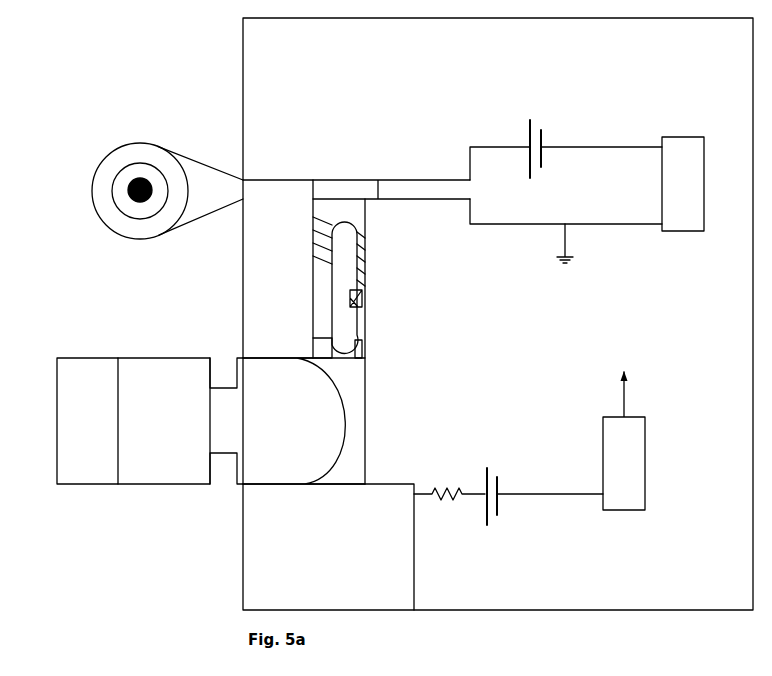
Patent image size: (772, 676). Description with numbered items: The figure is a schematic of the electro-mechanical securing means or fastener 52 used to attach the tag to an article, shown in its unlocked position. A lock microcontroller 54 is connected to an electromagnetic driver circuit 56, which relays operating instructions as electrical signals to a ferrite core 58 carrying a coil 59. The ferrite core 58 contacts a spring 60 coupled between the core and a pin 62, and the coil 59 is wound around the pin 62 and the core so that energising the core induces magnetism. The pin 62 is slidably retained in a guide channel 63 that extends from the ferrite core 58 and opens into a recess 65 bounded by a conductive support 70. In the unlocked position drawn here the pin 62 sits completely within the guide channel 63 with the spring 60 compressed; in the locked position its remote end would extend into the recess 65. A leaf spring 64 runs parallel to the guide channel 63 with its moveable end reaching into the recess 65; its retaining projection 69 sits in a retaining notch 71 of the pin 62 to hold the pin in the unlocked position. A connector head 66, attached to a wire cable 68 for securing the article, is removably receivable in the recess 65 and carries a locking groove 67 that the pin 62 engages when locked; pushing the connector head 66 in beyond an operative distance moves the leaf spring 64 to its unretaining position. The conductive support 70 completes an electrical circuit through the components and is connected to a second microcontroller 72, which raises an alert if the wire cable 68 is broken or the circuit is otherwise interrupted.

The fastener 52 is at (218, 68).
The lock microcontroller 54 is at (684, 150).
The electromagnetic driver circuit 56 is at (565, 145).
The ferrite core 58 is at (341, 180).
The coil 59 is at (125, 145).
The spring 60 is at (359, 238).
The pin 62 is at (127, 183).
The guide channel 63 is at (322, 287).
The leaf spring 64 is at (367, 427).
The recess 65 is at (353, 393).
The connector head 66 is at (150, 357).
The locking groove 67 is at (222, 362).
The wire cable 68 is at (78, 357).
The retaining projection 69 is at (359, 302).
The conductive support 70 is at (250, 577).
The retaining notch 71 is at (355, 293).
The microcontroller 72 is at (638, 470).